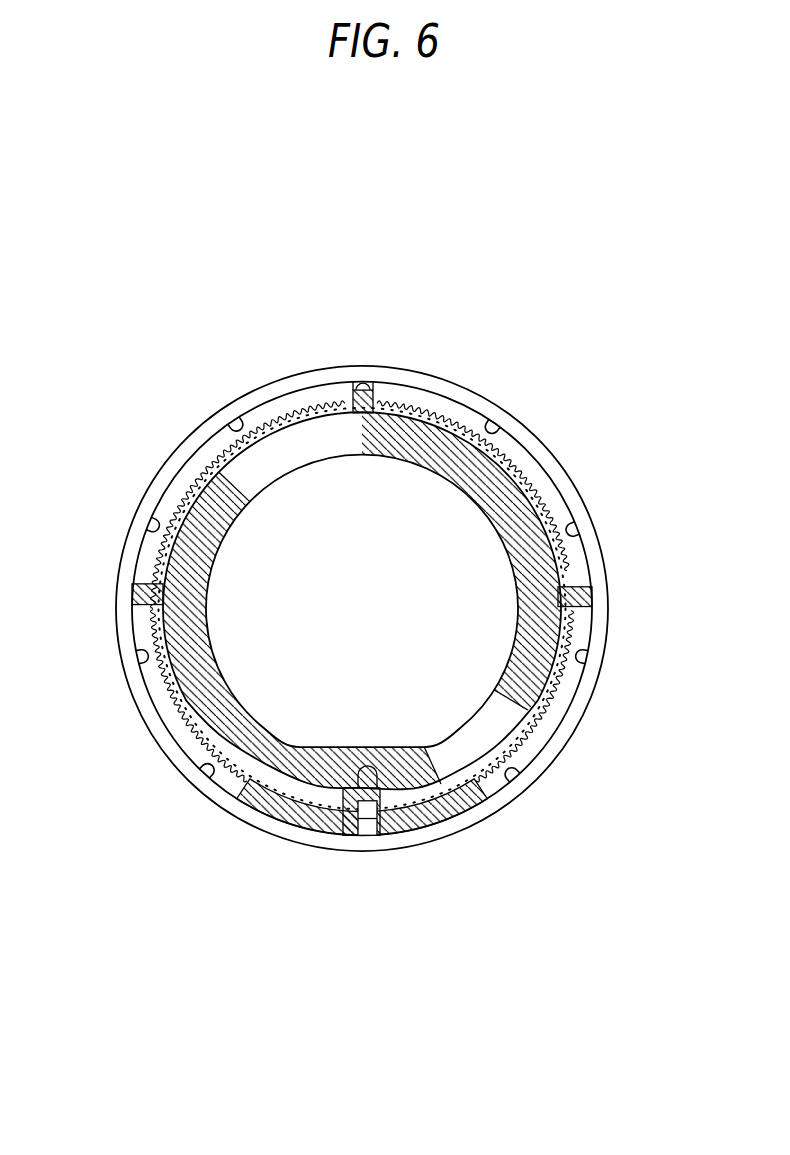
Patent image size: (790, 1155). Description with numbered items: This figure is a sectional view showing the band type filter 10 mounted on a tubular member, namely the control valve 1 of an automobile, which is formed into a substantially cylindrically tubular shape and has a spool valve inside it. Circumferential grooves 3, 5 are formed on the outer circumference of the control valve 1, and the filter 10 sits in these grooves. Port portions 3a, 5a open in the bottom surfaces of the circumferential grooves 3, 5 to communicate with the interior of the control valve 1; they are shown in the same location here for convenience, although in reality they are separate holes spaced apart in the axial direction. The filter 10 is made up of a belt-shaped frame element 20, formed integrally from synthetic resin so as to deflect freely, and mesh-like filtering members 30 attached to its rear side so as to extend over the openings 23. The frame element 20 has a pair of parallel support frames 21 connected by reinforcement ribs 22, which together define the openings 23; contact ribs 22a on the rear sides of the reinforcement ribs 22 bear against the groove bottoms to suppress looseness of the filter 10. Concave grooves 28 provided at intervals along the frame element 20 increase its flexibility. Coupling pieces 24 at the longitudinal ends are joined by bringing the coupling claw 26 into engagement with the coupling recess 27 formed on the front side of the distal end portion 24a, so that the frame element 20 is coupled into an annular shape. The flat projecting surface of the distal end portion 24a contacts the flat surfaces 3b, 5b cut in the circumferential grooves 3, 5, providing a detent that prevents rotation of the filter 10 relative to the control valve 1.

The control valve 1 is at (524, 399).
The band type filter 10 is at (430, 381).
The frame element 20 is at (318, 384).
The support frame 21 is at (276, 812).
The reinforcement rib 22 is at (593, 600).
The contact rib 22a is at (148, 581).
The opening 23 is at (256, 770).
The coupling piece 24 is at (342, 815).
The distal end portion 24a is at (346, 822).
The coupling claw 26 is at (370, 833).
The coupling recess 27 is at (360, 797).
The concave groove 28 is at (234, 424).
The filtering member 30 is at (543, 470).
The circumferential groove 3 is at (335, 626).
The circumferential groove 5 is at (206, 746).
The port portion 3a is at (407, 574).
The port portion 5a is at (290, 446).
The flat surface 3b is at (440, 841).
The flat surface 5b is at (390, 794).